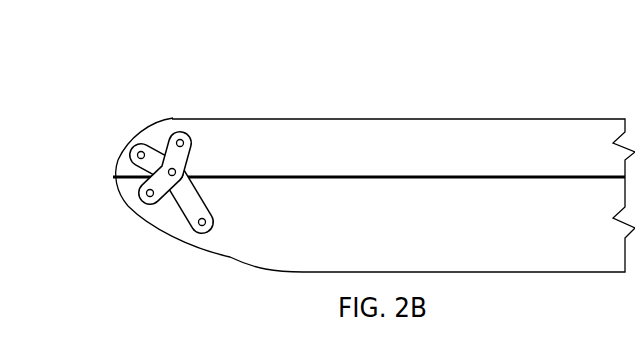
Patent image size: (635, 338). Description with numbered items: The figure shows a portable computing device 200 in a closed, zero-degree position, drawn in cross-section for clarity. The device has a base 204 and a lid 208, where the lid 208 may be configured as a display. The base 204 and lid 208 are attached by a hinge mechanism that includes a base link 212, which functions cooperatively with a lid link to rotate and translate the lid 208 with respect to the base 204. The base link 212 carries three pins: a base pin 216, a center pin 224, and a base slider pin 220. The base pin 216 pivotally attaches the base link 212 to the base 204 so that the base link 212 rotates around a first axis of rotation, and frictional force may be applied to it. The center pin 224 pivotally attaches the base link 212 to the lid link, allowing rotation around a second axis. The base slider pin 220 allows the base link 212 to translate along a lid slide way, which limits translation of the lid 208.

The portable computing device 200 is at (347, 148).
The base 204 is at (238, 262).
The lid 208 is at (422, 118).
The base link 212 is at (163, 141).
The base pin 216 is at (145, 182).
The base slider pin 220 is at (182, 143).
The center pin 224 is at (128, 163).